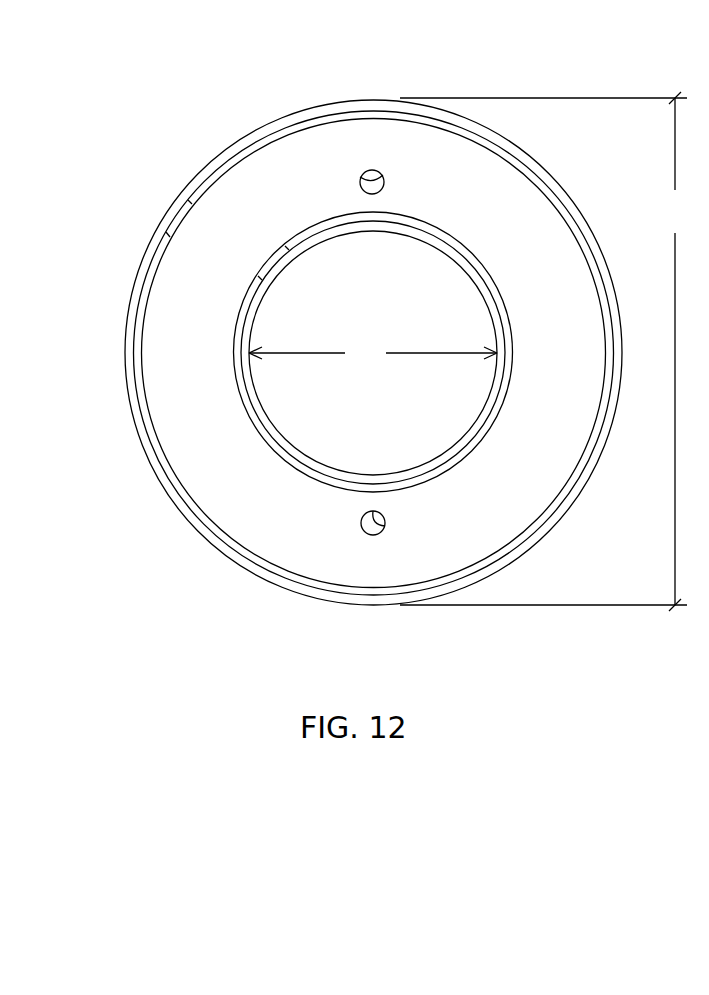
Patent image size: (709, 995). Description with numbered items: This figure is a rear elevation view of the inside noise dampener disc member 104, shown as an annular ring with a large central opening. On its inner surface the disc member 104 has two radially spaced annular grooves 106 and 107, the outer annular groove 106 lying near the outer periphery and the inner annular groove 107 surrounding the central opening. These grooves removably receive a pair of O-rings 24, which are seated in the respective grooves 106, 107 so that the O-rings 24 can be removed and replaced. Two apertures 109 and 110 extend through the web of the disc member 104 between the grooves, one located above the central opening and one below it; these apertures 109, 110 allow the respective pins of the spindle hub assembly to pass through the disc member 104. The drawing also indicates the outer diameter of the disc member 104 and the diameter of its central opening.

The inside noise dampener disc member 104 is at (430, 92).
The O-rings 24 is at (247, 142).
The annular groove 106 is at (177, 207).
The annular groove 107 is at (270, 263).
The aperture 109 is at (383, 173).
The aperture 110 is at (387, 528).